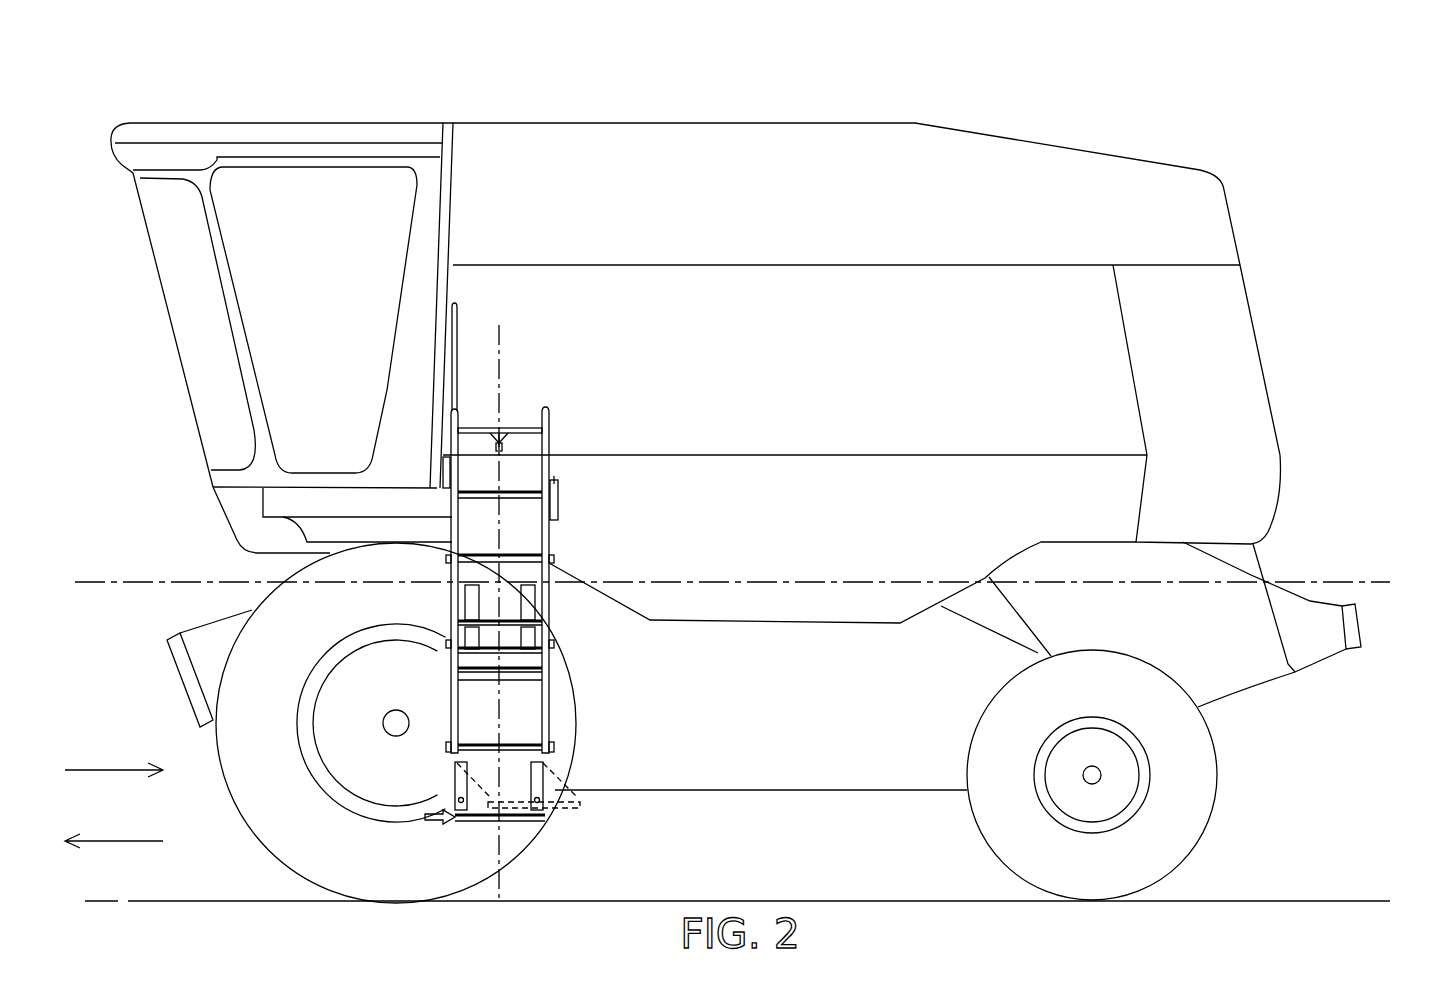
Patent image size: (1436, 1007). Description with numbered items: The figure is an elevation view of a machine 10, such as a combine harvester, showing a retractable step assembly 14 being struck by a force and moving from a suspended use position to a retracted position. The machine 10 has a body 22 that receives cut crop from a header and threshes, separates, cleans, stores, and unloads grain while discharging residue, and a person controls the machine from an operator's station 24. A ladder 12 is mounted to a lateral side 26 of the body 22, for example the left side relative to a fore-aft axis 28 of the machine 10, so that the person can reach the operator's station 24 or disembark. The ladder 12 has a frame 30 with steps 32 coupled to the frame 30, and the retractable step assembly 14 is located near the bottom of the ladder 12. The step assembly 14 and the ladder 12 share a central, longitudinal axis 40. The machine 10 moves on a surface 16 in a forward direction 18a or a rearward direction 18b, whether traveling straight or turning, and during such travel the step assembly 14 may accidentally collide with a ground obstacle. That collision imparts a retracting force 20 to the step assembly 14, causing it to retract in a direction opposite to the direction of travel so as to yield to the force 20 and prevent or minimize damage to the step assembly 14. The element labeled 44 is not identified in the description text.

The machine 10 is at (243, 82).
The ladder 12 is at (578, 400).
The retractable step assembly 14 is at (585, 771).
The surface 16 is at (1253, 900).
The forward direction 18a is at (100, 770).
The rearward direction 18b is at (115, 842).
The retracting force 20 is at (428, 822).
The body 22 is at (755, 370).
The operator's station 24 is at (349, 122).
The lateral side 26 is at (710, 437).
The fore-aft axis 28 is at (100, 582).
The frame 30 is at (560, 760).
The steps 32 is at (521, 498).
The central, longitudinal axis 40 is at (505, 338).
The bottom step 44 is at (518, 820).